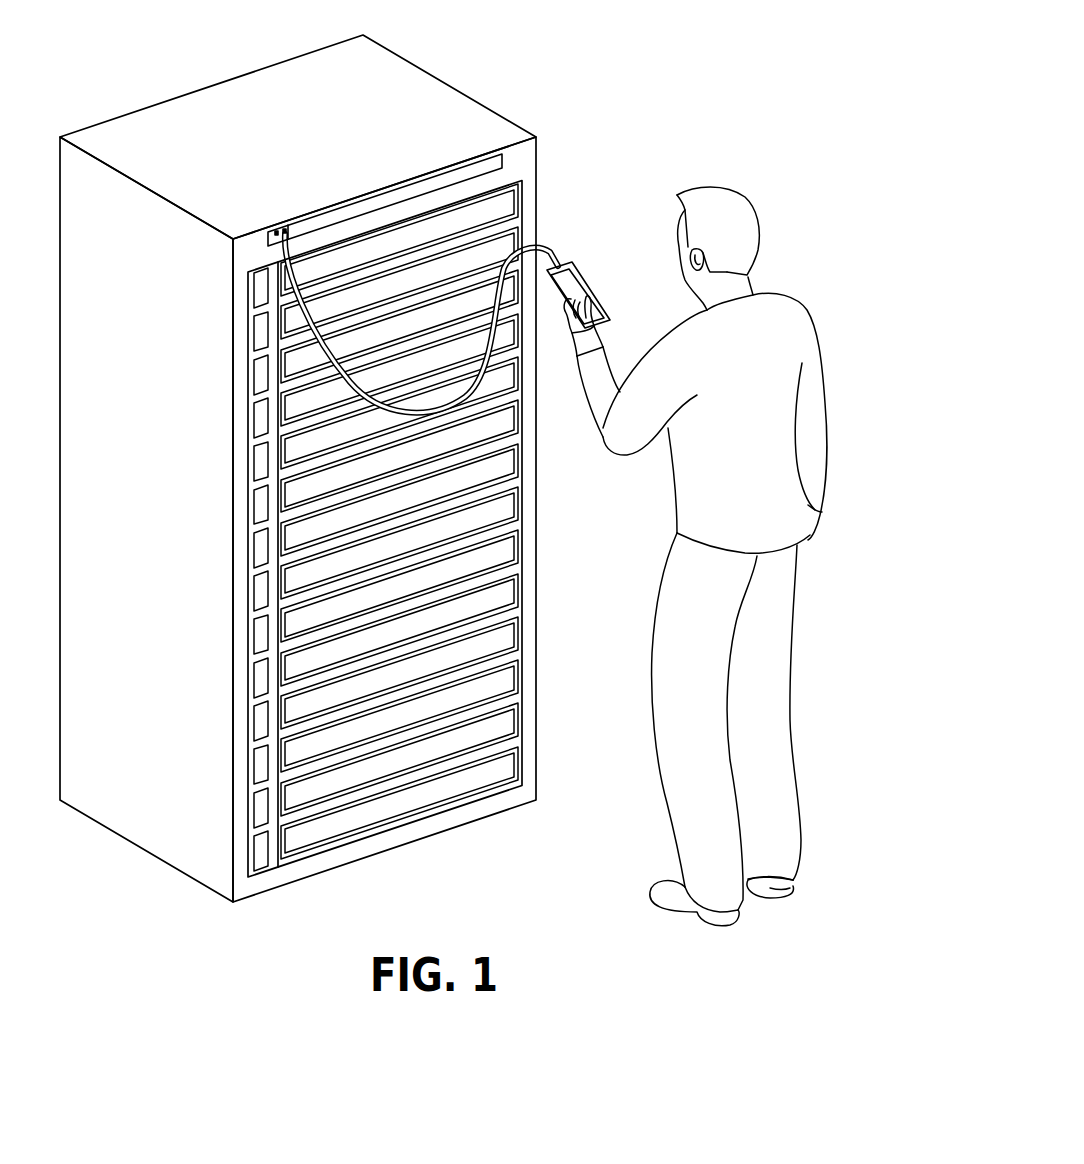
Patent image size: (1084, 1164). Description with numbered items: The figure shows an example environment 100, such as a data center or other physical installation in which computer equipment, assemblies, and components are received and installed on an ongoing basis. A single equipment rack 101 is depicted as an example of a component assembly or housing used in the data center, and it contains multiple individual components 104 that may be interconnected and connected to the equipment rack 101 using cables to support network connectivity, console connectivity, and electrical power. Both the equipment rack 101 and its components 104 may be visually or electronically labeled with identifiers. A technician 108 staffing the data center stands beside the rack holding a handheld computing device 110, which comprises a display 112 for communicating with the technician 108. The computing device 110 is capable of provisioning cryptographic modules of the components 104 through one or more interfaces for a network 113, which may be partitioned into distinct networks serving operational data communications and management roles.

The environment 100 is at (717, 78).
The equipment rack 101 is at (477, 100).
The components 104 is at (523, 776).
The technician 108 is at (670, 532).
The computing device 110 is at (633, 309).
The display 112 is at (570, 263).
The network 113 is at (305, 218).